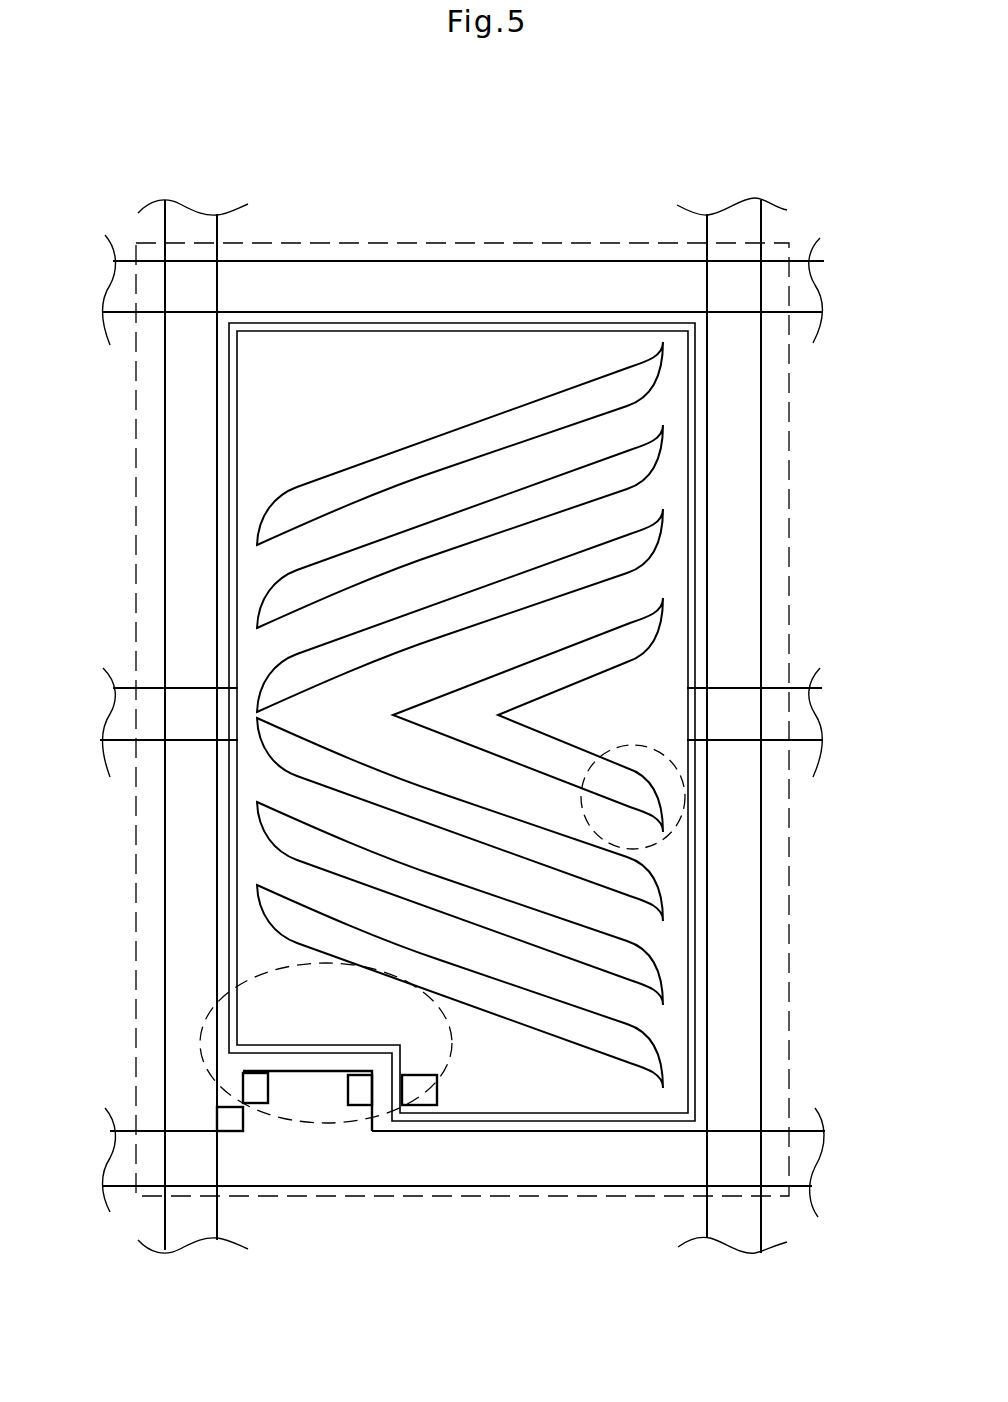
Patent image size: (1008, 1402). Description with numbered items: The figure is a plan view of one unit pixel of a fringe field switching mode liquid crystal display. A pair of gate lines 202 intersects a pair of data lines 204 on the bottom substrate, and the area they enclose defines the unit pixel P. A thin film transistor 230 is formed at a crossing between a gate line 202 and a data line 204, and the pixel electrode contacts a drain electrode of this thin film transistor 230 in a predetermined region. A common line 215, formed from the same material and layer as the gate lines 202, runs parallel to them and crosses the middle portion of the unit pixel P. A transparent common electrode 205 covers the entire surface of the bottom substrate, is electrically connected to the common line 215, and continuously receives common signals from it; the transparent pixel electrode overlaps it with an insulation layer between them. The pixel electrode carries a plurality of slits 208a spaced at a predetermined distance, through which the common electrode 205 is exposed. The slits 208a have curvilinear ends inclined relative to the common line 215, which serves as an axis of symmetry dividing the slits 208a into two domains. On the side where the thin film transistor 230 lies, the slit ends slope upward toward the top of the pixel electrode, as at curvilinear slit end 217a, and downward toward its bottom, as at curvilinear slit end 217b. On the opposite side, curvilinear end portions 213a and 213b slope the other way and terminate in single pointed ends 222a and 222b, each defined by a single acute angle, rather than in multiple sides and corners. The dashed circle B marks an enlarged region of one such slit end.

The gate line 202 is at (541, 1165).
The data line 204 is at (172, 888).
The common electrode 205 is at (698, 945).
The slit 208a is at (696, 540).
The curvilinear end portion 213a is at (266, 508).
The curvilinear end portion 213b is at (658, 374).
The common line 215 is at (156, 717).
The curvilinear slit end 217a is at (268, 843).
The curvilinear slit end 217b is at (658, 968).
The pointed end 222a is at (257, 545).
The pointed end 222b is at (664, 345).
The thin film transistor 230 is at (328, 1123).
The enlarged region B is at (672, 845).
The unit pixel P is at (790, 596).